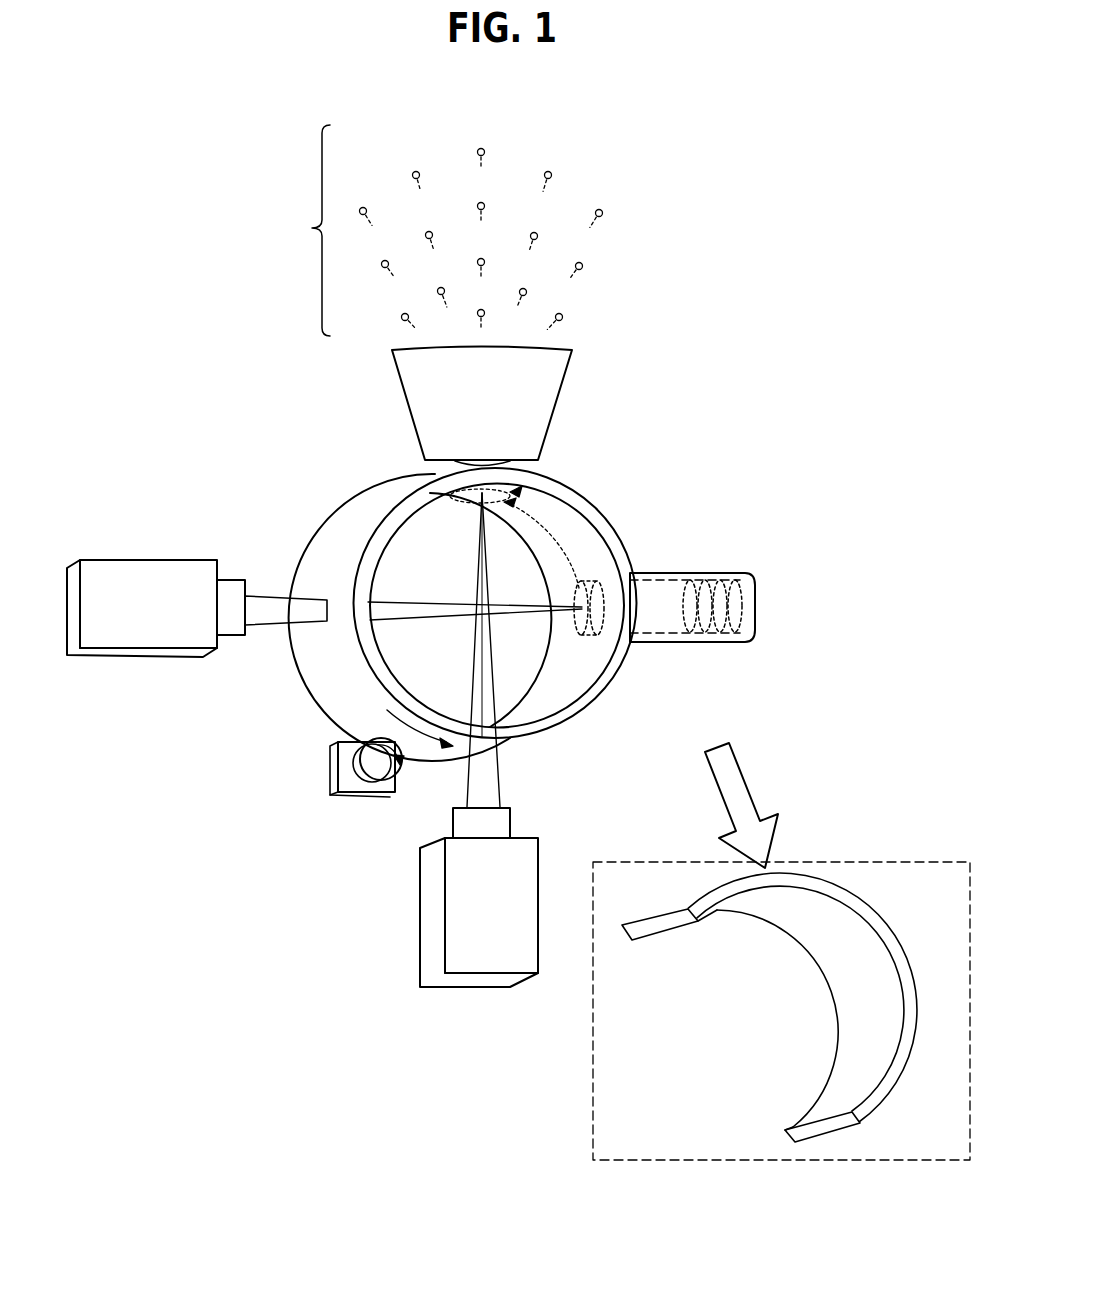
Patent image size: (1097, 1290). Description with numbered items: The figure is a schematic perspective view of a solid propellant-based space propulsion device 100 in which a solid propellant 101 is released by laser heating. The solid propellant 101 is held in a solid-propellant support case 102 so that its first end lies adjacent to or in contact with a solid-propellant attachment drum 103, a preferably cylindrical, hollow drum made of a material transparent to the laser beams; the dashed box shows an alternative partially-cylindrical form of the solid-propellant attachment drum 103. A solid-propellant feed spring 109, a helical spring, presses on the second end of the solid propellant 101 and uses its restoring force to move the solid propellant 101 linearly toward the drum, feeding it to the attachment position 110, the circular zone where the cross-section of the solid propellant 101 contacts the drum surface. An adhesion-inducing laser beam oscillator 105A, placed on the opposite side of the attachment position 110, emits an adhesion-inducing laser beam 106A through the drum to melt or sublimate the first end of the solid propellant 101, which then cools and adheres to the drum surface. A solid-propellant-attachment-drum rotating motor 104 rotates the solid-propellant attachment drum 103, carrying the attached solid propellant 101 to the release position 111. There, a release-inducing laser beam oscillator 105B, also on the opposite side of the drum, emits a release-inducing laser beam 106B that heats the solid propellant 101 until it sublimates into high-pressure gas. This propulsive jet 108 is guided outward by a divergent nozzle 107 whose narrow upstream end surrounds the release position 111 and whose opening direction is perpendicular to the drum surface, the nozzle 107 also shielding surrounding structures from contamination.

The solid propellant-based space propulsion device 100 is at (766, 205).
The solid propellant 101 is at (675, 578).
The solid-propellant support case 102 is at (732, 573).
The solid-propellant attachment drum 103 is at (368, 497).
The solid-propellant-attachment-drum rotating motor 104 is at (362, 790).
The adhesion-inducing laser beam oscillator 105A is at (165, 560).
The release-inducing laser beam oscillator 105B is at (418, 947).
The adhesion-inducing laser beam 106A is at (280, 597).
The release-inducing laser beam 106B is at (498, 783).
The nozzle 107 is at (575, 352).
The propulsive jet 108 is at (298, 228).
The solid-propellant feed spring 109 is at (740, 605).
The attachment position 110 is at (592, 603).
The release position 111 is at (522, 489).